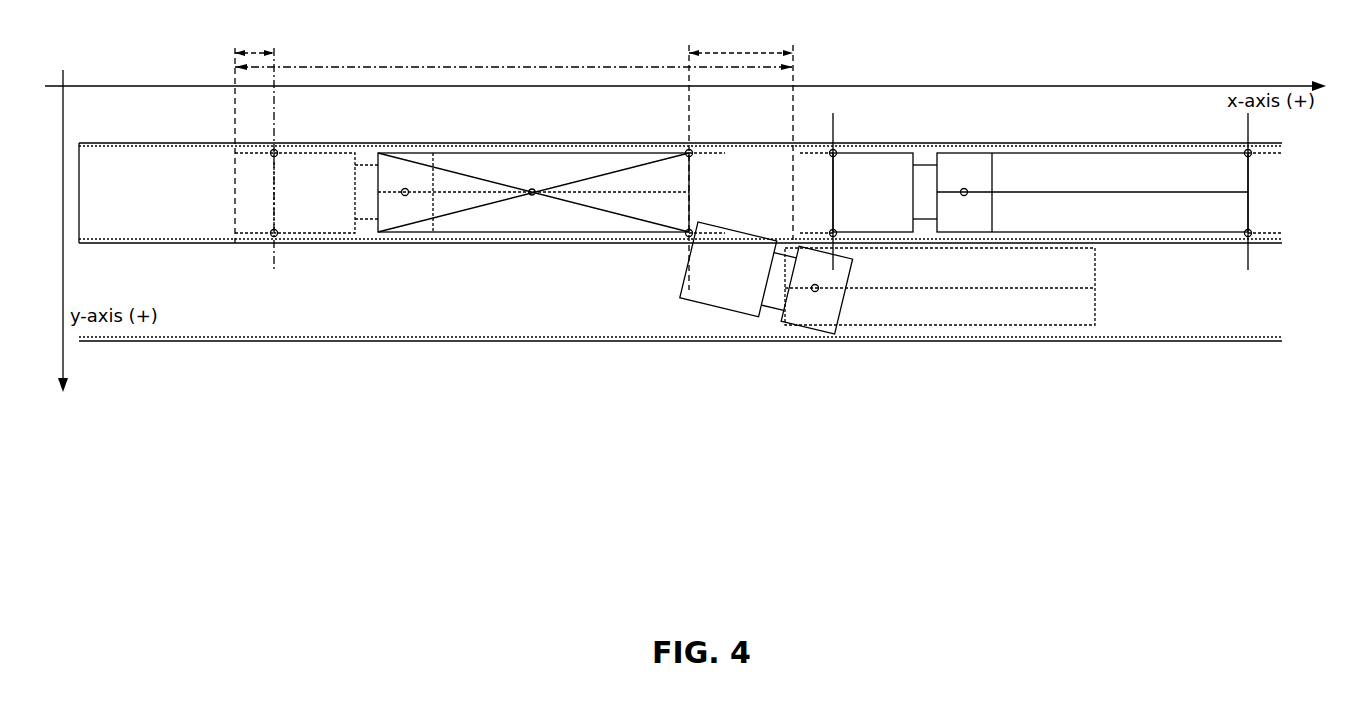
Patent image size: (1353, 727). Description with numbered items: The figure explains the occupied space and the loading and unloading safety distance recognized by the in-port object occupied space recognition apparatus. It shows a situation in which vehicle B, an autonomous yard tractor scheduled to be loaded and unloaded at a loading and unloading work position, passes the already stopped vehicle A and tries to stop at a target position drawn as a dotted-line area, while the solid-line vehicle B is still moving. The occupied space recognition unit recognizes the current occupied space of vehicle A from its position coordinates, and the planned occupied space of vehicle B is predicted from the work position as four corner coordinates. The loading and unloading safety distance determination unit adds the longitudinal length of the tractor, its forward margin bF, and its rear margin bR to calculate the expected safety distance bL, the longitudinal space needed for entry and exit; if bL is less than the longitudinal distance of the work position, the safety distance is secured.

The vehicle A is at (1041, 191).
The vehicle B is at (544, 242).
The forward margin bF is at (254, 41).
The expected safety distance bL is at (514, 57).
The rear margin bR is at (741, 41).